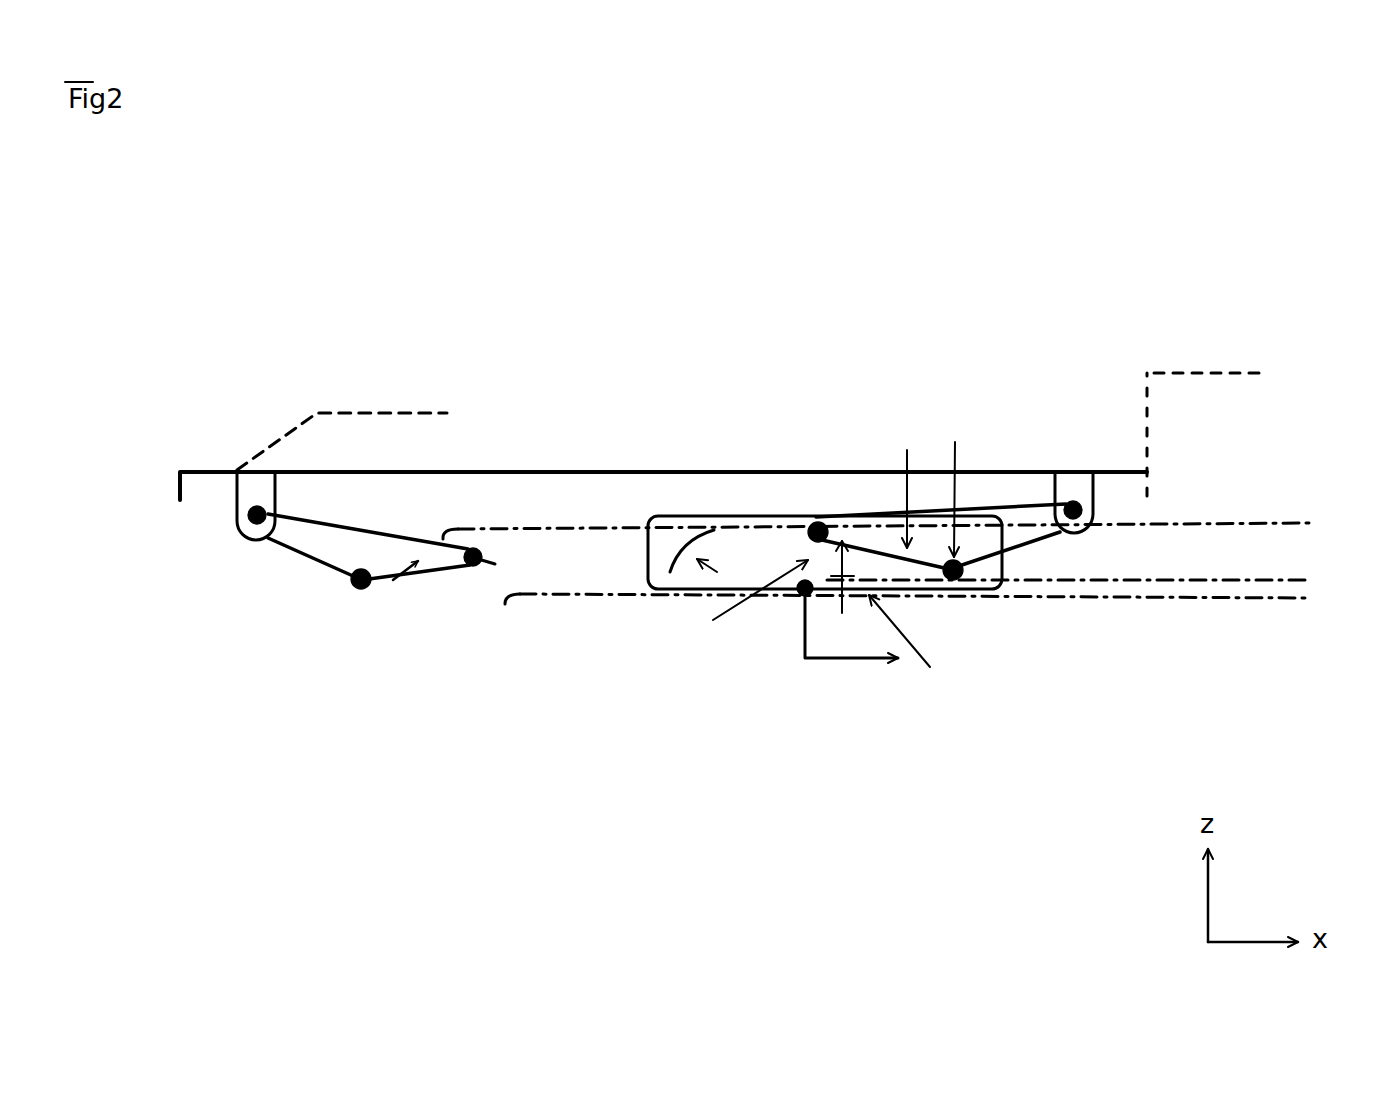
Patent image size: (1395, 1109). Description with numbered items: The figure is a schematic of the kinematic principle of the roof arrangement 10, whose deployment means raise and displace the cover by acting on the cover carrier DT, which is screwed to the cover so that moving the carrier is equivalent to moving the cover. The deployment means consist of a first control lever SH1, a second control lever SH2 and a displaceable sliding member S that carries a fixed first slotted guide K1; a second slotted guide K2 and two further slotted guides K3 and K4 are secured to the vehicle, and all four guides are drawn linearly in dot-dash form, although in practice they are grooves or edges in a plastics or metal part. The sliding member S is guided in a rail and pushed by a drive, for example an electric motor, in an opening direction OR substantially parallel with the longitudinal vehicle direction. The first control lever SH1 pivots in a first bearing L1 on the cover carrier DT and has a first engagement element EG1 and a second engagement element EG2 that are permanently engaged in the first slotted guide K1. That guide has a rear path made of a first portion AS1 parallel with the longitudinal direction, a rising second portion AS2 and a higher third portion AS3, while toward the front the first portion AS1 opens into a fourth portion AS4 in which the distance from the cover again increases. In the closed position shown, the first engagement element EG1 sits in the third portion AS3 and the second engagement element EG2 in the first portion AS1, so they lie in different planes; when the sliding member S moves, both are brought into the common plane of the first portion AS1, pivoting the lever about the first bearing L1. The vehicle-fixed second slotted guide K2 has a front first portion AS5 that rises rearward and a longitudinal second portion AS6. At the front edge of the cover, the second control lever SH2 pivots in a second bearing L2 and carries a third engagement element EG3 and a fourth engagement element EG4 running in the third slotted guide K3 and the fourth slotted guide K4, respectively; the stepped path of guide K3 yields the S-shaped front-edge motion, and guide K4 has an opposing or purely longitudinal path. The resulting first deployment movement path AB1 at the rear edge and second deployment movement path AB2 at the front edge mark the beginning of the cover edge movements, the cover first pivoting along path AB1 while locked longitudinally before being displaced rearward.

The arrangement 10 is at (1297, 175).
The cover carrier DT is at (727, 468).
The second deployment movement path AB2 is at (343, 413).
The first deployment movement path AB1 is at (1245, 372).
The second control lever SH2 is at (299, 553).
The first control lever SH1 is at (1017, 500).
The second bearing L2 is at (240, 512).
The first bearing L1 is at (1085, 495).
The first engagement element EG1 is at (962, 595).
The second engagement element EG2 is at (836, 526).
The third engagement element EG3 is at (362, 590).
The fourth engagement element EG4 is at (472, 566).
The first slotted guide K1 is at (680, 538).
The second slotted guide K2 is at (1247, 600).
The third slotted guide K3 is at (531, 535).
The fourth slotted guide K4 is at (512, 598).
The sliding member S is at (642, 555).
The first portion AS1 is at (847, 619).
The second portion AS2 is at (911, 479).
The third portion AS3 is at (971, 482).
The fourth portion AS4 is at (736, 571).
The first portion of second slotted guide AS5 is at (740, 602).
The second portion of second slotted guide AS6 is at (928, 639).
The opening direction OR is at (850, 662).